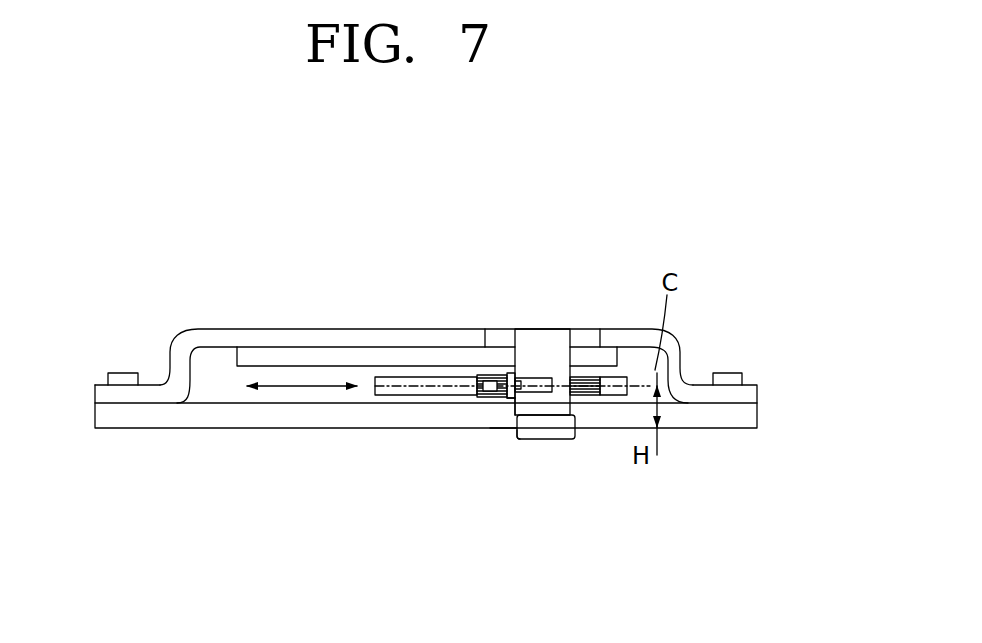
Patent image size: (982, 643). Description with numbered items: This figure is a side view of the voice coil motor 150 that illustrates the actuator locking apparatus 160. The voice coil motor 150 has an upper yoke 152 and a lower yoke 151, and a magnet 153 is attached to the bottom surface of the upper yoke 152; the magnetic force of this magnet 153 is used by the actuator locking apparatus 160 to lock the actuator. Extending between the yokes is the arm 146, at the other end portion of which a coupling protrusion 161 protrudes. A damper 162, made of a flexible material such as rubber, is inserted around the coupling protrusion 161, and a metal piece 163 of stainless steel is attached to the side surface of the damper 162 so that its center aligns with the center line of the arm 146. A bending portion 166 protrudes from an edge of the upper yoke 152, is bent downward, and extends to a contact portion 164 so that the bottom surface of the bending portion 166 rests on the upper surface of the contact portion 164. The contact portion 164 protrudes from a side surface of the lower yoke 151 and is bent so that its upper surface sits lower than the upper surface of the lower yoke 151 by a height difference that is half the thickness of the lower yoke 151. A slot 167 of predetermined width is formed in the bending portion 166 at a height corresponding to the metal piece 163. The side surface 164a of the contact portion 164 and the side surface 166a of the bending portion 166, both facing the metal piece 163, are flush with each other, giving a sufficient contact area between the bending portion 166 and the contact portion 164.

The voice coil motor 150 is at (170, 317).
The lower yoke 151 is at (230, 428).
The upper yoke 152 is at (230, 337).
The magnet 153 is at (312, 357).
The arm 146 is at (390, 392).
The coupling protrusion 161 is at (507, 398).
The damper 162 is at (490, 373).
The metal piece 163 is at (507, 376).
The contact portion 164 is at (552, 430).
The side surface of the contact portion 164a is at (503, 442).
The bending portion 166 is at (553, 338).
The side surface of the bending portion 166a is at (515, 405).
The slot 167 is at (537, 382).
The actuator locking apparatus 160 is at (497, 437).